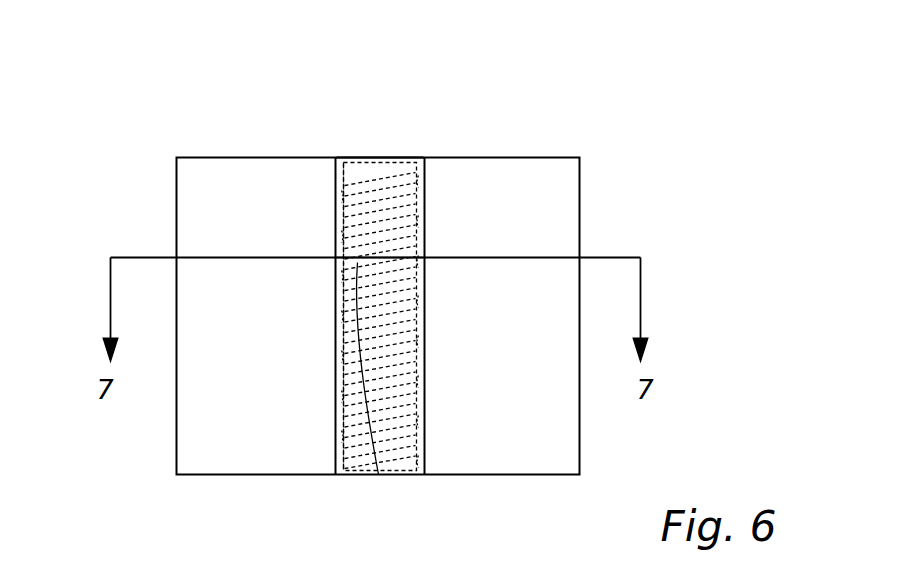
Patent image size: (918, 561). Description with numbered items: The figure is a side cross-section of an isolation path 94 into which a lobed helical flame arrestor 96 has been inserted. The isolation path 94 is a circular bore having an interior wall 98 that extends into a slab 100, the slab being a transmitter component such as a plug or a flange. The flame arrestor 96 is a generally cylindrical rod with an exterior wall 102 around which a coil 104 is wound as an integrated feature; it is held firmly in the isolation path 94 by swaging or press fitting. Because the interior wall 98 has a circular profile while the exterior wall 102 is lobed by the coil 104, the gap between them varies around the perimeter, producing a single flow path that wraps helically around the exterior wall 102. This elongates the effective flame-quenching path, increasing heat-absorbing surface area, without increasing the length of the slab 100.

The isolation path 94 is at (446, 189).
The lobed helical flame arrestor 96 is at (373, 137).
The interior wall 98 is at (425, 227).
The slab 100 is at (538, 432).
The exterior wall 102 is at (367, 245).
The coil 104 is at (378, 474).